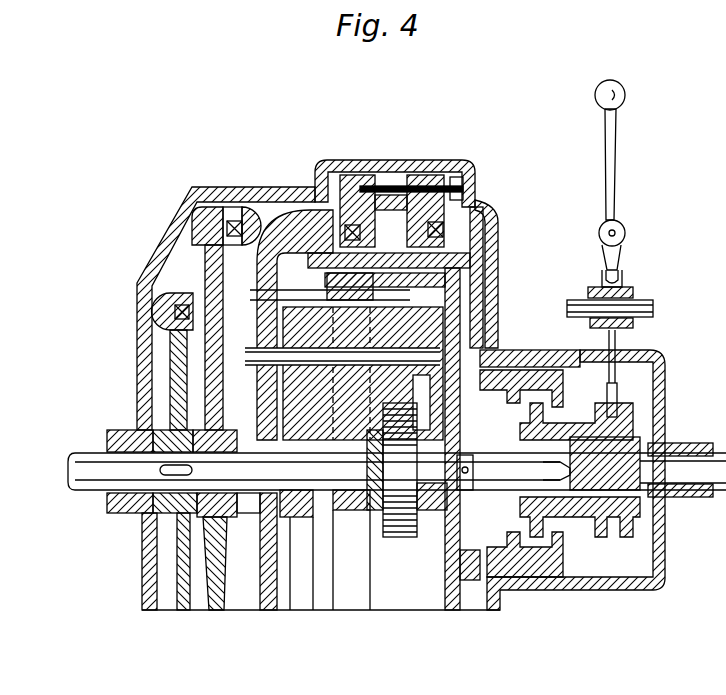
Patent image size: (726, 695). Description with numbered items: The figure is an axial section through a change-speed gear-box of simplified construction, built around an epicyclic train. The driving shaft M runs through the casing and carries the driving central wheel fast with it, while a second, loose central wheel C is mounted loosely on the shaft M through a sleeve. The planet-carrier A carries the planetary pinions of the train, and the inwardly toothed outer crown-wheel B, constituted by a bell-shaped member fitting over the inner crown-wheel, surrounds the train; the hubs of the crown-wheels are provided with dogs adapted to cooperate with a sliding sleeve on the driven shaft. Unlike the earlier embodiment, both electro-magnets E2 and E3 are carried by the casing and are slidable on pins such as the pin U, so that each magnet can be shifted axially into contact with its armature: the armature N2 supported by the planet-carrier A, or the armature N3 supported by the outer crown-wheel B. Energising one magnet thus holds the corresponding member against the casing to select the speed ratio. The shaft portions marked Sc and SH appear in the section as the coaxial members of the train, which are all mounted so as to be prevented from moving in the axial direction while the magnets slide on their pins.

The planet-carrier A is at (258, 268).
The outer crown-wheel B is at (394, 266).
The loose central wheel C is at (168, 298).
The armature N2 is at (310, 224).
The armature N3 is at (478, 206).
The sun shaft Sc is at (308, 300).
The hollow shaft SH is at (405, 338).
The driving shaft M is at (403, 537).
The electro-magnet E2 is at (352, 182).
The electro-magnet E3 is at (436, 183).
The pin U is at (398, 185).